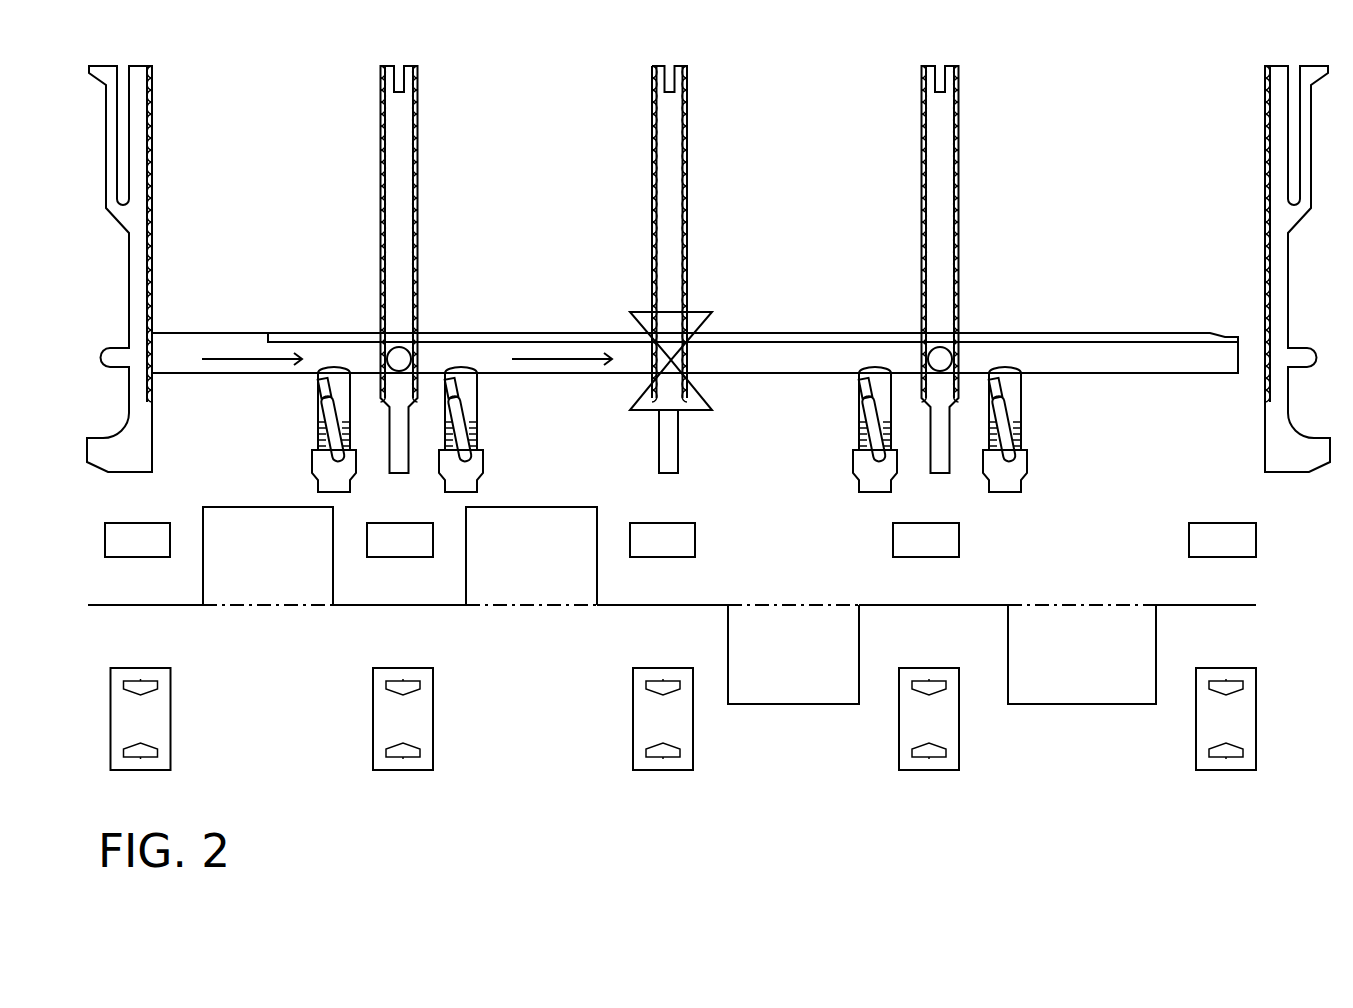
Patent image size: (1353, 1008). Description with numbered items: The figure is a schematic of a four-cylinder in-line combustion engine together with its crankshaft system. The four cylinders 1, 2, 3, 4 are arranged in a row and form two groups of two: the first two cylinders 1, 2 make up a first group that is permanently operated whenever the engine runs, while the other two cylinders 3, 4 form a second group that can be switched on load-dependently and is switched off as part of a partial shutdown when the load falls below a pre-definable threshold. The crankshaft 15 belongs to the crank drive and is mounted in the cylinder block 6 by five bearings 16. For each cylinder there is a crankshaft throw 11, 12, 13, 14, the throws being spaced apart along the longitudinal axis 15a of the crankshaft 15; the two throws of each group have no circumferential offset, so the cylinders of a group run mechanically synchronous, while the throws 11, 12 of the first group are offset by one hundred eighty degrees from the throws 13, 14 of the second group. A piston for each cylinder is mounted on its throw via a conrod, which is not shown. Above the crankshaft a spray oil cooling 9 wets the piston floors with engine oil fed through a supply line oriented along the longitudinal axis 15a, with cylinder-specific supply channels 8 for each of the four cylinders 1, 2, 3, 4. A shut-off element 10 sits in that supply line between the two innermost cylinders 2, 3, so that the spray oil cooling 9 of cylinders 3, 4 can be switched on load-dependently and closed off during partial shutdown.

The cylinder 1 is at (251, 190).
The cylinder 2 is at (546, 190).
The cylinder 3 is at (818, 190).
The cylinder 4 is at (1090, 190).
The cylinder block 6 is at (1003, 792).
The cylinder-specific supply channel 8 is at (318, 412).
The spray oil cooling 9 is at (1000, 525).
The shut-off element 10 is at (703, 321).
The crankshaft throw 11 is at (279, 569).
The crankshaft throw 12 is at (520, 569).
The crankshaft throw 13 is at (783, 675).
The crankshaft throw 14 is at (1071, 684).
The crankshaft 15 is at (152, 606).
The longitudinal axis 15a is at (252, 606).
The bearing 16 is at (127, 734).